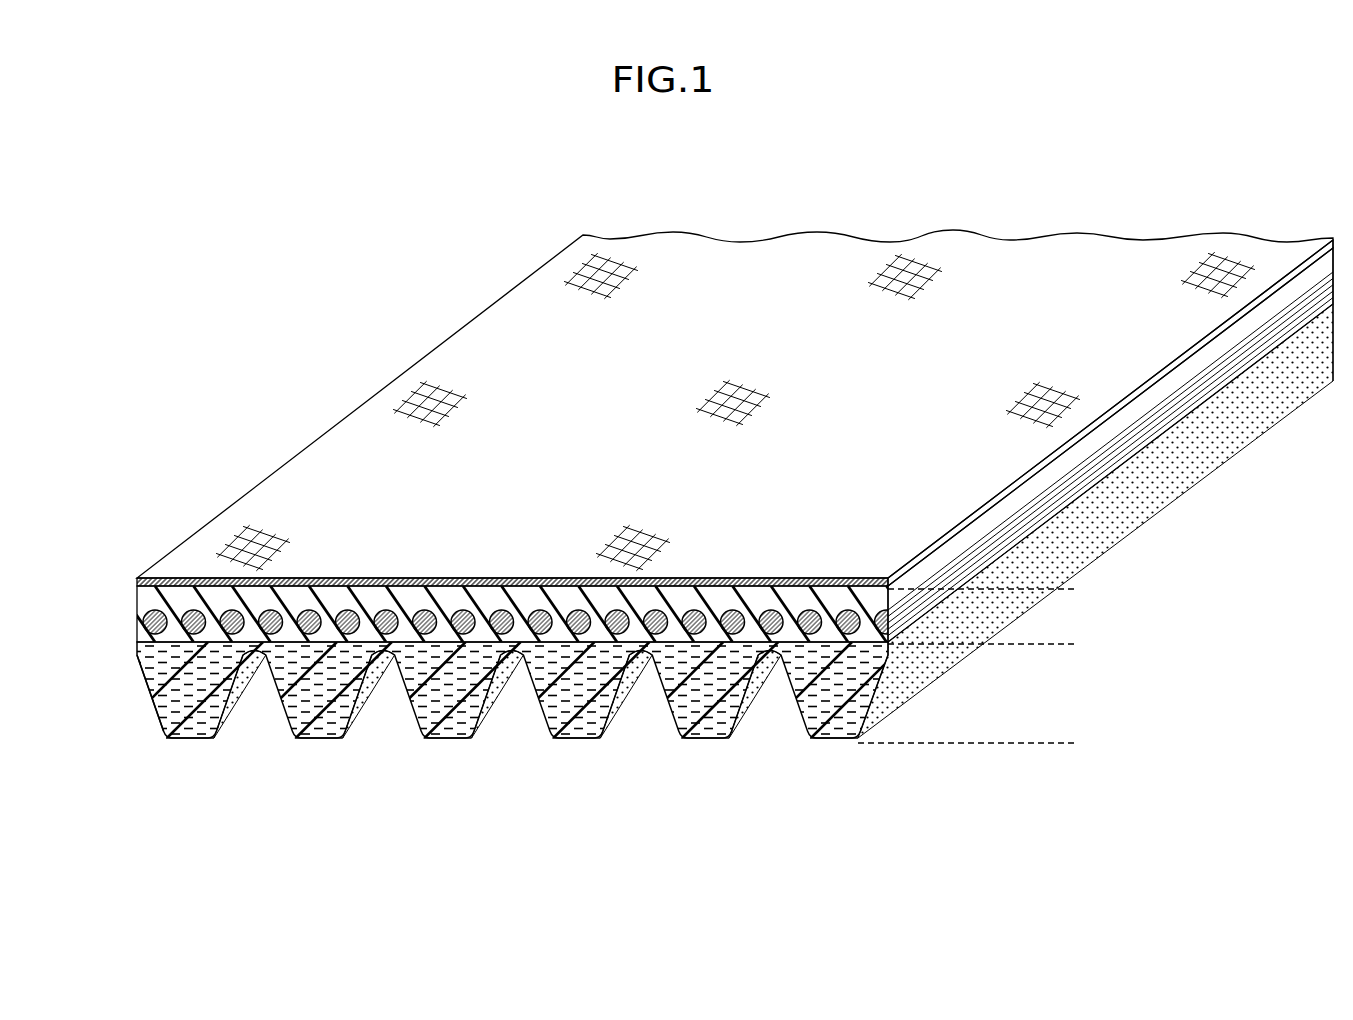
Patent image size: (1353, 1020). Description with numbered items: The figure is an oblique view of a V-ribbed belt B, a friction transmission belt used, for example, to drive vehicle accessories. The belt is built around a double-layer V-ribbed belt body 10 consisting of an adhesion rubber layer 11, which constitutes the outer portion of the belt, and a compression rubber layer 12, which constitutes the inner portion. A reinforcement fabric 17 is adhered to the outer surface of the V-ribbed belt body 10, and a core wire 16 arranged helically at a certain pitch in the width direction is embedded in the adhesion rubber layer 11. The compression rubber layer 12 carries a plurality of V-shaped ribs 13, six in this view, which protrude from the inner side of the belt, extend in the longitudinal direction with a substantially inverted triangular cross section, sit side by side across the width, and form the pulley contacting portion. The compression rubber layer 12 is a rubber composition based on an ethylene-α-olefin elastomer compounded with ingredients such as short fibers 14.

The V-ribbed belt B is at (439, 255).
The V-ribbed belt body 10 is at (1133, 602).
The adhesion rubber layer 11 is at (1077, 589).
The compression rubber layer 12 is at (1077, 646).
The V-shaped ribs 13 is at (188, 736).
The short fibers 14 is at (150, 700).
The core wire 16 is at (137, 621).
The reinforcement fabric 17 is at (155, 582).